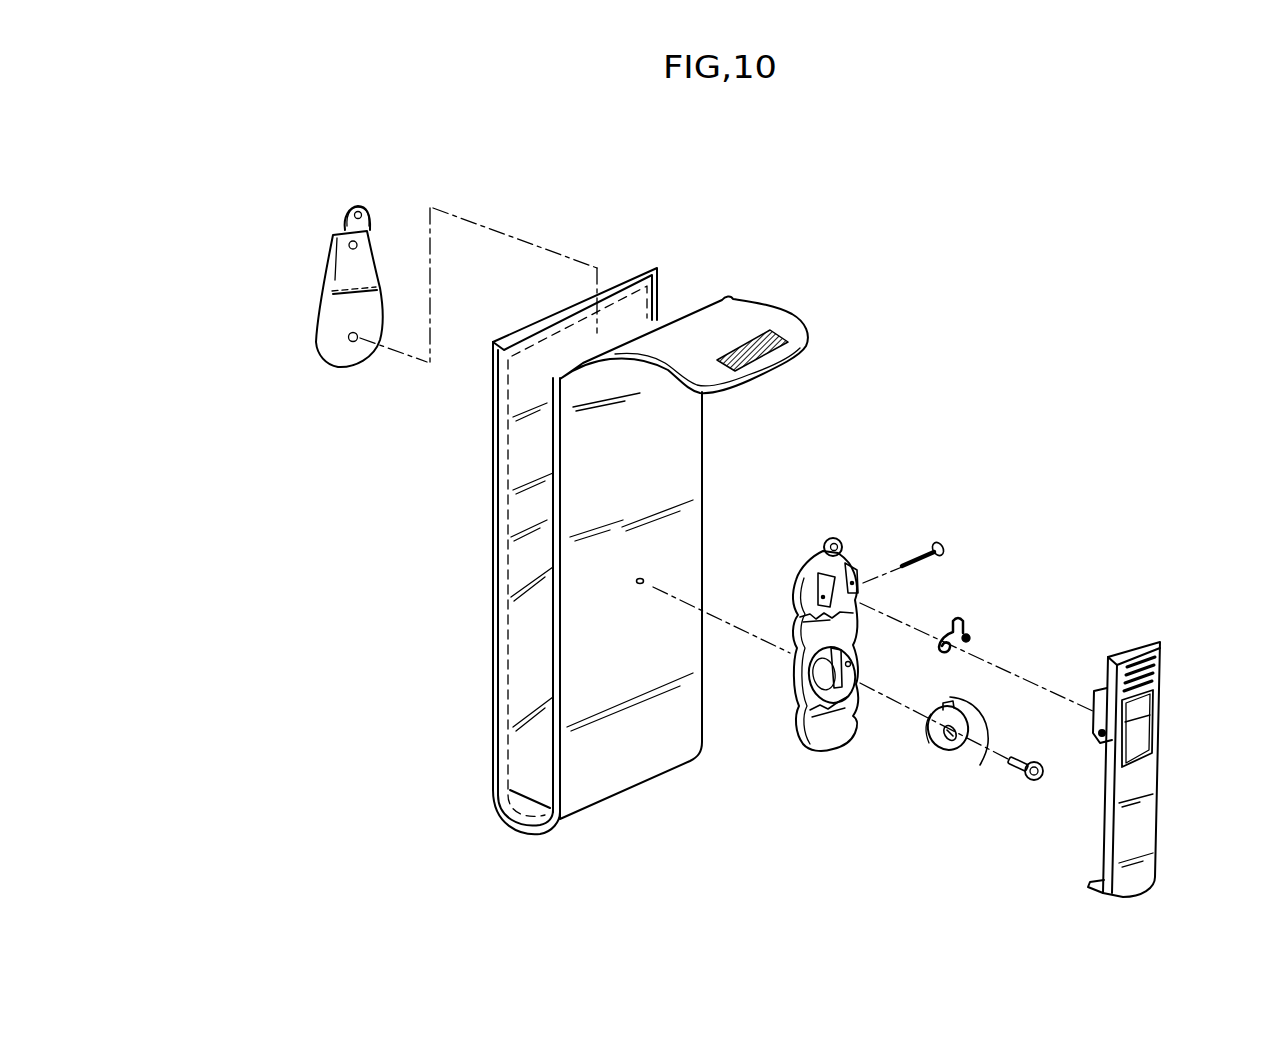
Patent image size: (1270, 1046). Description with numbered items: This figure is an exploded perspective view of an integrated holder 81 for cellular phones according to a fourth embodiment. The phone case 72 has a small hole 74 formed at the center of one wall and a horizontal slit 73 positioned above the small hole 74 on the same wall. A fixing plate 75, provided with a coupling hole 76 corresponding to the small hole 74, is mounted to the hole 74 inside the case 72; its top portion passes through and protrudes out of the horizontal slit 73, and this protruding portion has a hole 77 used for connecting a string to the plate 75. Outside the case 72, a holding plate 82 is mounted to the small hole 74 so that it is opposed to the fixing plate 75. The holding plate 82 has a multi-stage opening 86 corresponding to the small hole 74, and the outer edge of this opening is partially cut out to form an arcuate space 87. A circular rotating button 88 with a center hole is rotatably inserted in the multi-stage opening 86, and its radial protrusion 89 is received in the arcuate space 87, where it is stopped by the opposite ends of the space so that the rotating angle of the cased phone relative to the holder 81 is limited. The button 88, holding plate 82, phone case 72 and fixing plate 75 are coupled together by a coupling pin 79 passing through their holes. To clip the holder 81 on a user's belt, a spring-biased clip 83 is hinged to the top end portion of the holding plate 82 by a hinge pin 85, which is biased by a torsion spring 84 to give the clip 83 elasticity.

The phone case 72 is at (473, 692).
The horizontal slit 73 is at (630, 480).
The small hole 74 is at (645, 579).
The fixing plate 75 is at (305, 303).
The coupling hole 76 is at (348, 338).
The hole 77 is at (367, 210).
The coupling pin 79 is at (1034, 785).
The holder 81 is at (1110, 561).
The holding plate 82 is at (857, 538).
The spring-biased clip 83 is at (1155, 800).
The torsion spring 84 is at (964, 620).
The hinge pin 85 is at (940, 545).
The multi-stage opening 86 is at (835, 692).
The arcuate space 87 is at (852, 722).
The circular rotating button 88 is at (940, 757).
The radial protrusion 89 is at (980, 765).